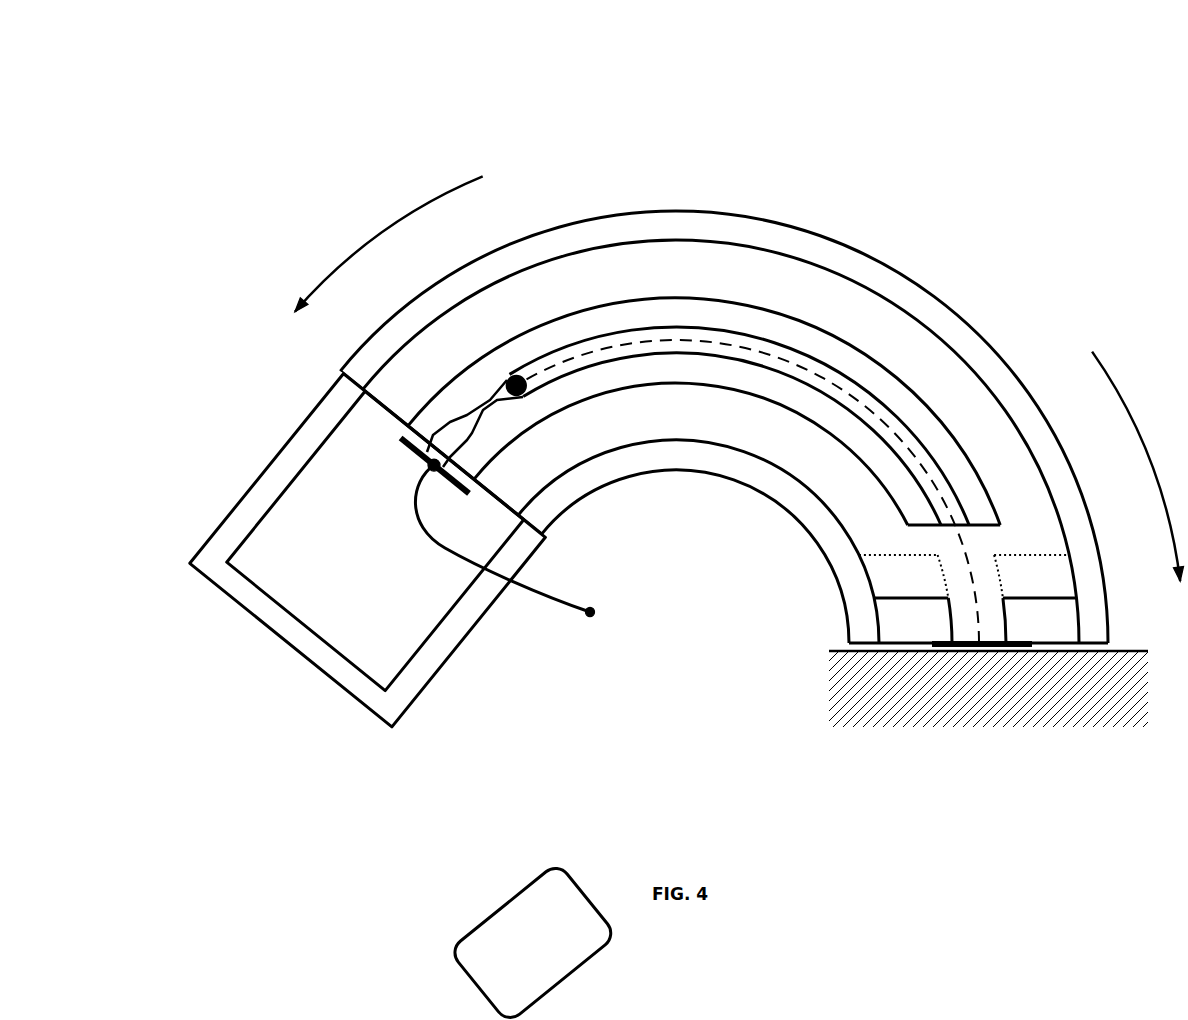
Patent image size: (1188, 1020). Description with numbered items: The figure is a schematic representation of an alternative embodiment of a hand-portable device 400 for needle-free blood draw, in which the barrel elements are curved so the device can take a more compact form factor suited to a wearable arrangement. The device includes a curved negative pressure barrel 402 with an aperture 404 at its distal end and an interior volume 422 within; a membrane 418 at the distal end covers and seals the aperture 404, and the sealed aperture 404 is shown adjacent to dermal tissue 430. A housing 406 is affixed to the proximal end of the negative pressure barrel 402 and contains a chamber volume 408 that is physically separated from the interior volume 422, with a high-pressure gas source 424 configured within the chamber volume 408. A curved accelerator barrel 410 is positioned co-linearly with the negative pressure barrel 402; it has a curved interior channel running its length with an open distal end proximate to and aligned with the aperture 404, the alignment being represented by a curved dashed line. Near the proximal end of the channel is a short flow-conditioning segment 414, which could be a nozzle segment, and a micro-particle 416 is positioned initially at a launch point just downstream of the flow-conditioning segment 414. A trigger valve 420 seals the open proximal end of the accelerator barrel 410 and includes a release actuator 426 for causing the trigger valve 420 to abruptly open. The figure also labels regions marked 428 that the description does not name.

The hand-portable device 400 is at (690, 122).
The negative pressure barrel 402 is at (784, 225).
The aperture 404 is at (985, 562).
The housing 406 is at (251, 488).
The chamber volume 408 is at (370, 430).
The accelerator barrel 410 is at (689, 298).
The flow-conditioning segment 414 is at (490, 422).
The micro-particle 416 is at (520, 373).
The membrane 418 is at (946, 640).
The trigger valve 420 is at (425, 465).
The interior volume 422 is at (764, 437).
The high-pressure gas source 424 is at (488, 794).
The release actuator 426 is at (504, 549).
The chamber 428 is at (968, 576).
The dermal tissue 430 is at (841, 650).